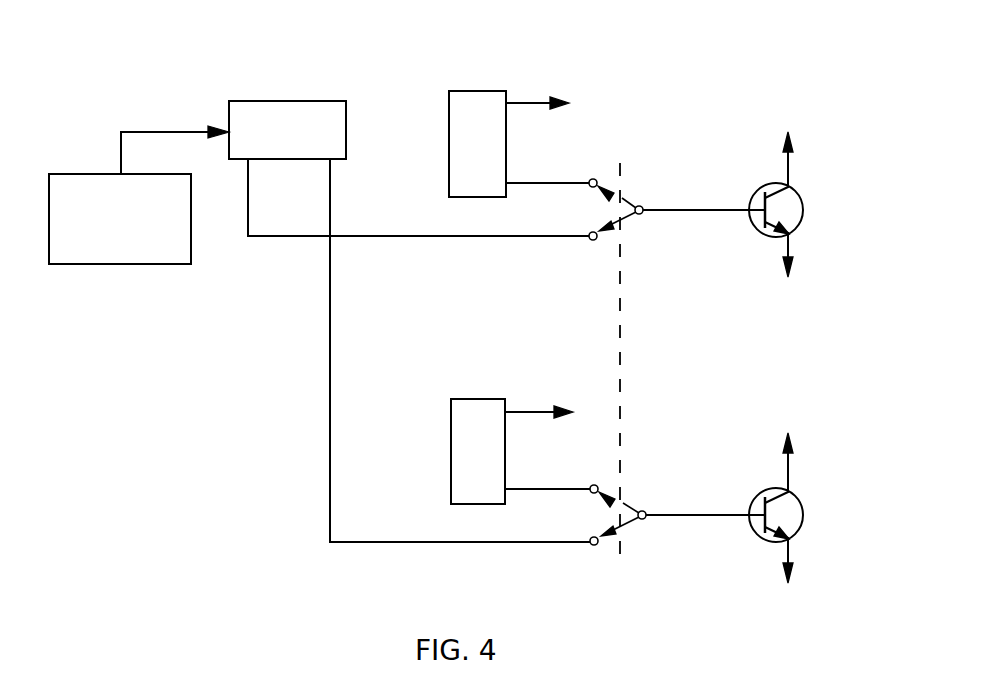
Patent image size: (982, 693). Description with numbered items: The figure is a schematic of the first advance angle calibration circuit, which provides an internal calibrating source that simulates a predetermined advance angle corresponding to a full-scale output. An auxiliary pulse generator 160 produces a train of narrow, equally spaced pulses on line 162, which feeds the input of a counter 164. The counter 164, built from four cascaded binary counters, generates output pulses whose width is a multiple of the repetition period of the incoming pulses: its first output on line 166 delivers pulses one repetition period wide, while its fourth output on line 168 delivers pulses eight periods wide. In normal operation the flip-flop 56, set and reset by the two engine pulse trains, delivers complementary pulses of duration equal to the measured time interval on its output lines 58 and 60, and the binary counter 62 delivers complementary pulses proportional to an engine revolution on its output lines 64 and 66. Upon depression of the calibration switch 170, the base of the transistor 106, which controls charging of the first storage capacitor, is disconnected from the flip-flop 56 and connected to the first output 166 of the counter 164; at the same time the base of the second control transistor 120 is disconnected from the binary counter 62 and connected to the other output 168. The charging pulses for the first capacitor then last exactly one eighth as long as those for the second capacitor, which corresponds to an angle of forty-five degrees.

The auxiliary pulse generator 160 is at (88, 173).
The line 162 is at (155, 131).
The counter 164 is at (293, 101).
The first output line 166 is at (283, 238).
The fourth output line 168 is at (332, 400).
The flip-flop 56 is at (497, 90).
The complementary output line 58 is at (537, 102).
The complementary output line 60 is at (545, 180).
The calibration switch 170 is at (636, 189).
The transistor 106 is at (802, 198).
The binary counter 62 is at (487, 398).
The output line 64 is at (537, 408).
The output line 66 is at (538, 487).
The second control transistor 120 is at (802, 513).